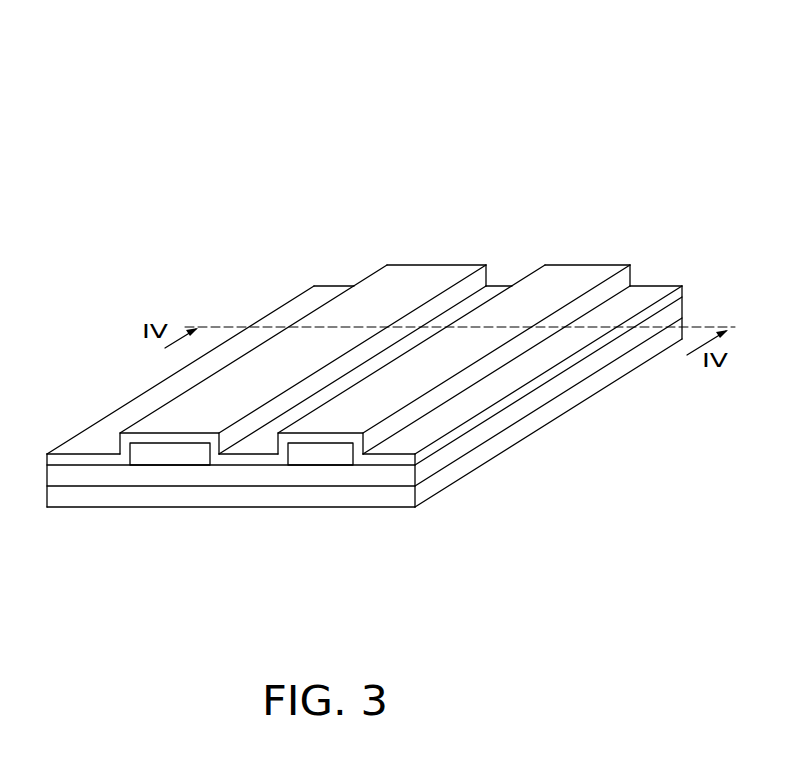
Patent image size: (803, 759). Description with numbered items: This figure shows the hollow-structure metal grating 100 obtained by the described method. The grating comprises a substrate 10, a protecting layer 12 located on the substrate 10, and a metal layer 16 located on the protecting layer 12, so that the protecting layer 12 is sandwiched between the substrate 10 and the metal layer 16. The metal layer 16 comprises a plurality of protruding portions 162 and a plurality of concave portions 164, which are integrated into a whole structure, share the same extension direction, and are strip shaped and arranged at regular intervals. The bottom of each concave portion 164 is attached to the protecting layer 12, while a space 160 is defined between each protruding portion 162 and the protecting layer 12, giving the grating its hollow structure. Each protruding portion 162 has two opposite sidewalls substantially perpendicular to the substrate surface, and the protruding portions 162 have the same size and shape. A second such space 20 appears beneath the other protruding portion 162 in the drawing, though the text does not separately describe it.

The hollow-structure metal grating 100 is at (396, 80).
The substrate 10 is at (427, 487).
The protecting layer 12 is at (457, 450).
The metal layer 16 is at (661, 287).
The space 160 is at (160, 455).
The protruding portions 162 is at (147, 438).
The concave portions 164 is at (245, 458).
The second electrode 20 is at (318, 458).